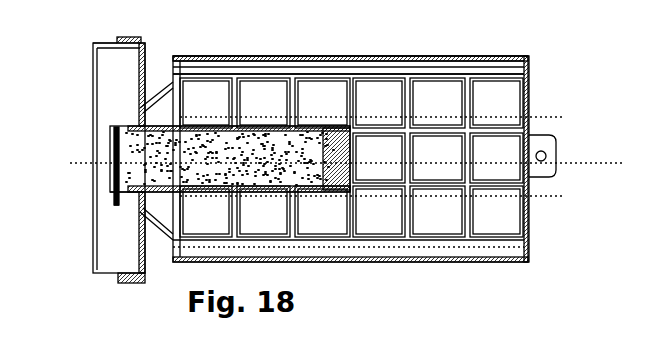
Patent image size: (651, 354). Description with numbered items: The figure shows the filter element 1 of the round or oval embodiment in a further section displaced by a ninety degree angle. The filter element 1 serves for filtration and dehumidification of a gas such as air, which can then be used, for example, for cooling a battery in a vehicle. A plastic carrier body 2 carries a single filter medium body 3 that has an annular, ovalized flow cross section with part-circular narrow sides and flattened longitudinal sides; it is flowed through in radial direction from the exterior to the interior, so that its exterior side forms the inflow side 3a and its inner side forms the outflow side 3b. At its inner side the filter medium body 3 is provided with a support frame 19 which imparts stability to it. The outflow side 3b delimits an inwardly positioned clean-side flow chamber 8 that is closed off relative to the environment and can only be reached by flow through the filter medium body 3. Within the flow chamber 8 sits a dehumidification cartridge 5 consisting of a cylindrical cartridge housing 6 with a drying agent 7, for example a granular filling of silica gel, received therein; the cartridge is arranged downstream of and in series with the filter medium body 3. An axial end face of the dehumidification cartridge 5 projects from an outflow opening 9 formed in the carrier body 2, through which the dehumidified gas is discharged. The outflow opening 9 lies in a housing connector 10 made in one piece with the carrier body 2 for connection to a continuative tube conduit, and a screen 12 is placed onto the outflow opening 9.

The filter element 1 is at (404, 49).
The carrier body 2 is at (144, 53).
The filter medium body 3 is at (444, 64).
The inflow side 3a is at (483, 58).
The outflow side 3b is at (483, 78).
The dehumidification cartridge 5 is at (304, 128).
The cartridge housing 6 is at (210, 128).
The drying agent 7 is at (268, 143).
The clean-side flow chamber 8 is at (446, 168).
The outflow opening 9 is at (117, 202).
The housing connector 10 is at (100, 47).
The screen 12 is at (110, 178).
The support frame 19 is at (405, 218).